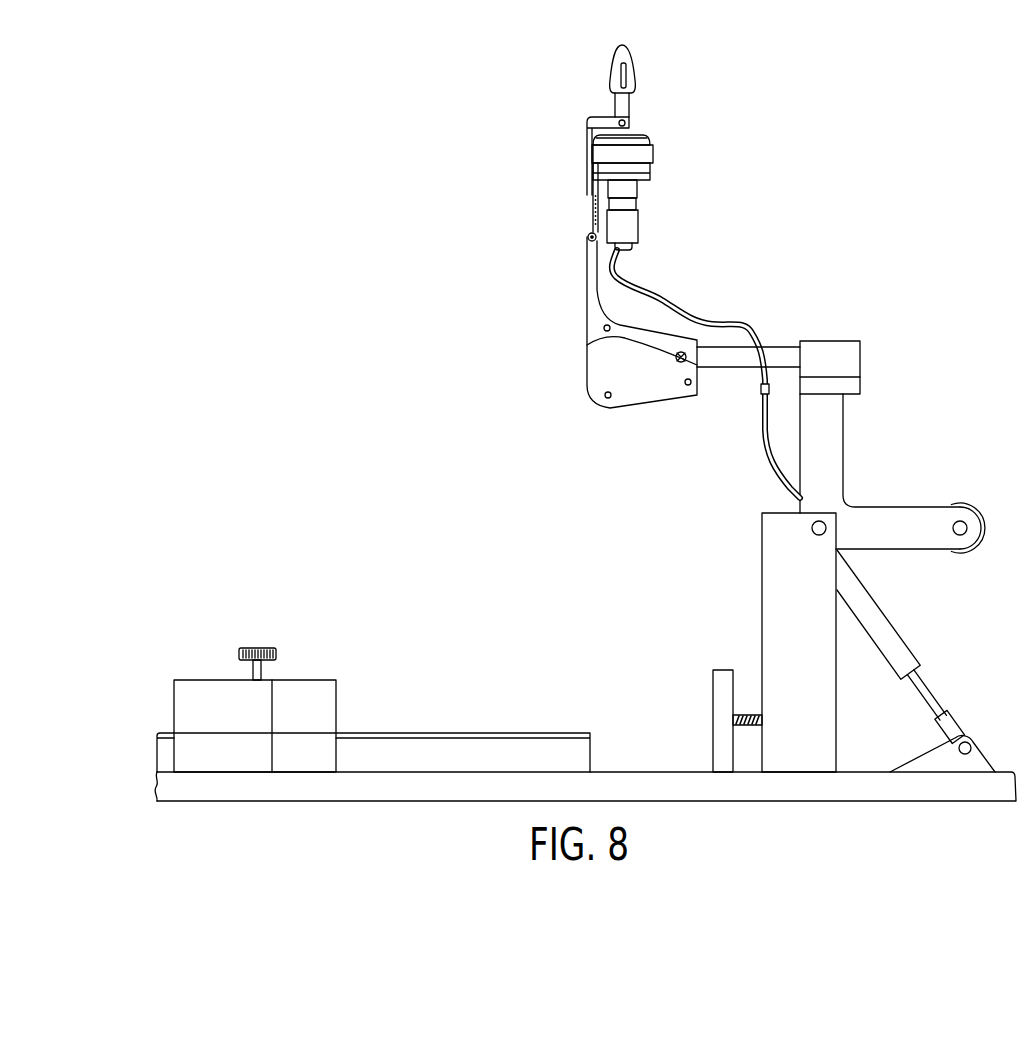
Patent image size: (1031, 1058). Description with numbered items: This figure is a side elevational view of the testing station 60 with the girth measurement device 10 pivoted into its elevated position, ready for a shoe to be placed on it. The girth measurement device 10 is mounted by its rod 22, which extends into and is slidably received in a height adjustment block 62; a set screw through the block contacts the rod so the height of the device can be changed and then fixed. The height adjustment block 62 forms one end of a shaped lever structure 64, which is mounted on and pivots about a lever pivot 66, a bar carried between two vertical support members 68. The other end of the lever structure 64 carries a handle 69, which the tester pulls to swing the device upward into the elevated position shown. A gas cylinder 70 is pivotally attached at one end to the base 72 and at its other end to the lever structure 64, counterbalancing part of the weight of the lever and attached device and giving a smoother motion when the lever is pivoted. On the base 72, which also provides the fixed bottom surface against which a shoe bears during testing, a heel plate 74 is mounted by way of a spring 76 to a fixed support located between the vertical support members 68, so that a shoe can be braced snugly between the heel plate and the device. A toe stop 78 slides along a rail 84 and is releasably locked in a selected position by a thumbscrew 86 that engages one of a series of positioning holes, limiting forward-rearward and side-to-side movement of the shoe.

The girth measurement device 10 is at (723, 279).
The rod 22 is at (721, 362).
The testing station 60 is at (931, 456).
The height adjustment block 62 is at (820, 345).
The lever structure 64 is at (838, 445).
The lever pivot 66 is at (817, 534).
The vertical support members 68 is at (773, 655).
The handle 69 is at (978, 508).
The gas cylinder 70 is at (892, 635).
The base 72 is at (930, 792).
The heel plate 74 is at (718, 702).
The spring 76 is at (745, 728).
The toe stop 78 is at (323, 692).
The rail 84 is at (427, 748).
The thumbscrew 86 is at (252, 647).